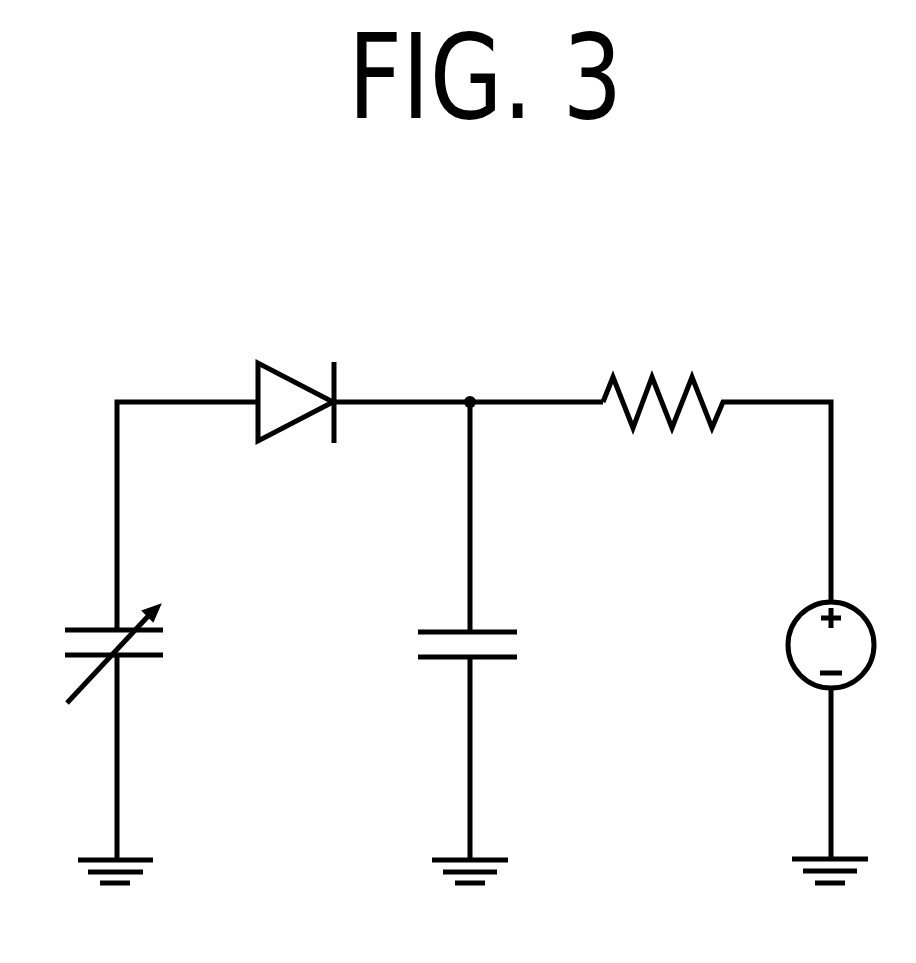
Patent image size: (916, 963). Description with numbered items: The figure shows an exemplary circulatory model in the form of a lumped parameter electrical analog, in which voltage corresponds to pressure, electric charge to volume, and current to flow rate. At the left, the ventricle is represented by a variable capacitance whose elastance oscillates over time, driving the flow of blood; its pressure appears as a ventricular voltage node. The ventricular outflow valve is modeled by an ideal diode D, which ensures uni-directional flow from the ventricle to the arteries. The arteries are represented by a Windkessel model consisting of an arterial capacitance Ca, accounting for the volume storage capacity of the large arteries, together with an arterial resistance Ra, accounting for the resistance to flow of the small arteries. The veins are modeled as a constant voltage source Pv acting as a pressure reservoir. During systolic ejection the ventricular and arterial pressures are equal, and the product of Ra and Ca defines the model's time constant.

The ideal diode D is at (296, 402).
The arterial resistance Ra is at (717, 451).
The arterial capacitance Ca is at (509, 748).
The venous pressure source Pv is at (798, 742).